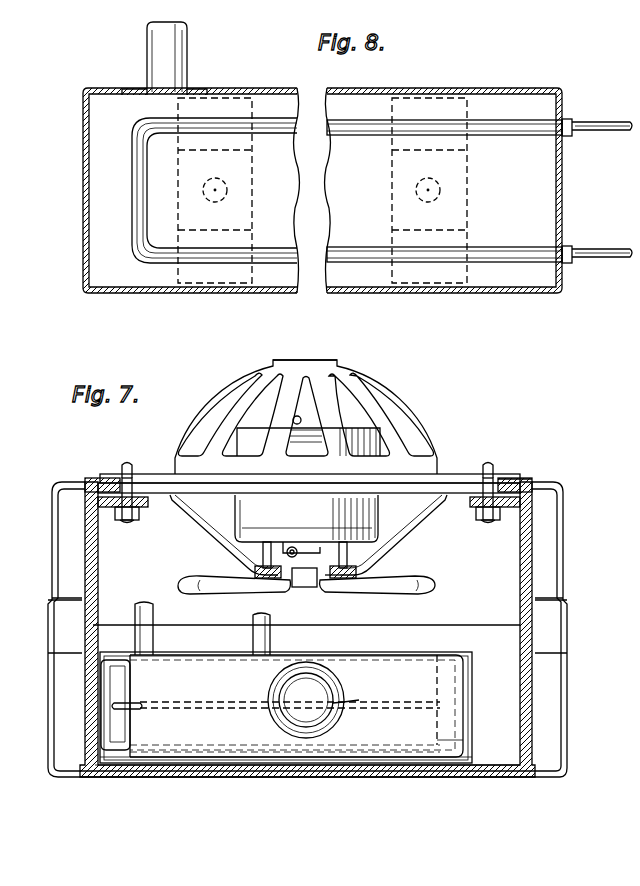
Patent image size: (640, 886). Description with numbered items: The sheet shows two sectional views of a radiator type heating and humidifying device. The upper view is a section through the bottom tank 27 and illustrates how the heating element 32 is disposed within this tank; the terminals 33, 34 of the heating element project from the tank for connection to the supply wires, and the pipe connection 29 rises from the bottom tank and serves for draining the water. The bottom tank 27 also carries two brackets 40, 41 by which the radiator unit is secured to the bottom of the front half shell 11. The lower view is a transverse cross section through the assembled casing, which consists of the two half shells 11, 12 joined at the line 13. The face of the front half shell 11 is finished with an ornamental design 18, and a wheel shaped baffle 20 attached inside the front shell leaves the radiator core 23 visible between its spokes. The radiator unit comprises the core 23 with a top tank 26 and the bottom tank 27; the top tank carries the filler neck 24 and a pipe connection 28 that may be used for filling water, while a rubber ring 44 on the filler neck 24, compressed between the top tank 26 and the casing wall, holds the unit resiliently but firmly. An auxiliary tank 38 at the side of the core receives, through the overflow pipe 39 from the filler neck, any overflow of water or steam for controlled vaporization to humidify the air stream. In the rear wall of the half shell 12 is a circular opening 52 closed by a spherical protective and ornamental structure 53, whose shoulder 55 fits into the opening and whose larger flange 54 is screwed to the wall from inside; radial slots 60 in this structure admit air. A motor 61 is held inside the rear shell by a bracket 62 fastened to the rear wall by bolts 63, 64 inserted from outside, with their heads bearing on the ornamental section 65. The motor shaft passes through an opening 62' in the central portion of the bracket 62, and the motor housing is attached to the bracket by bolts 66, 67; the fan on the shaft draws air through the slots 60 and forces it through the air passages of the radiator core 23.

In FIG. 7, the half shell 11 is at (548, 723).
In FIG. 7, the half shell 12 is at (562, 545).
In FIG. 7, the joining line 13 is at (487, 622).
In FIG. 7, the ornamental design 18 is at (135, 780).
In FIG. 7, the wheel shaped baffle 20 is at (295, 765).
In FIG. 7, the radiator core 23 is at (420, 763).
In FIG. 7, the filler neck 24 is at (365, 700).
In FIG. 7, the top tank 26 is at (452, 734).
In FIG. 8, the bottom tank 27 is at (384, 90).
In FIG. 7, the bottom tank 27 is at (463, 688).
In FIG. 7, the pipe connection 28 is at (270, 620).
In FIG. 8, the pipe connection 29 is at (188, 53).
In FIG. 7, the pipe connection 29 is at (153, 618).
In FIG. 8, the heating element 32 is at (498, 126).
In FIG. 8, the terminal 33 is at (601, 126).
In FIG. 8, the terminal 34 is at (592, 248).
In FIG. 7, the auxiliary tank 38 is at (118, 727).
In FIG. 7, the overflow pipe 39 is at (186, 700).
In FIG. 8, the bracket 40 is at (467, 180).
In FIG. 8, the bracket 41 is at (252, 100).
In FIG. 7, the rubber ring 44 is at (345, 680).
In FIG. 7, the circular opening 52 is at (140, 478).
In FIG. 7, the spherical protective and ornamental structure 53 is at (332, 366).
In FIG. 7, the flange 54 is at (480, 494).
In FIG. 7, the shoulder 55 is at (430, 482).
In FIG. 7, the radial slot 60 is at (418, 428).
In FIG. 7, the motor 61 is at (378, 518).
In FIG. 7, the bracket 62 is at (315, 535).
In FIG. 7, the opening 62' is at (350, 595).
In FIG. 7, the bolt 63 is at (125, 466).
In FIG. 7, the bolt 64 is at (496, 474).
In FIG. 7, the ornamental section 65 is at (505, 472).
In FIG. 7, the bolt 66 is at (265, 557).
In FIG. 7, the bolt 67 is at (347, 556).